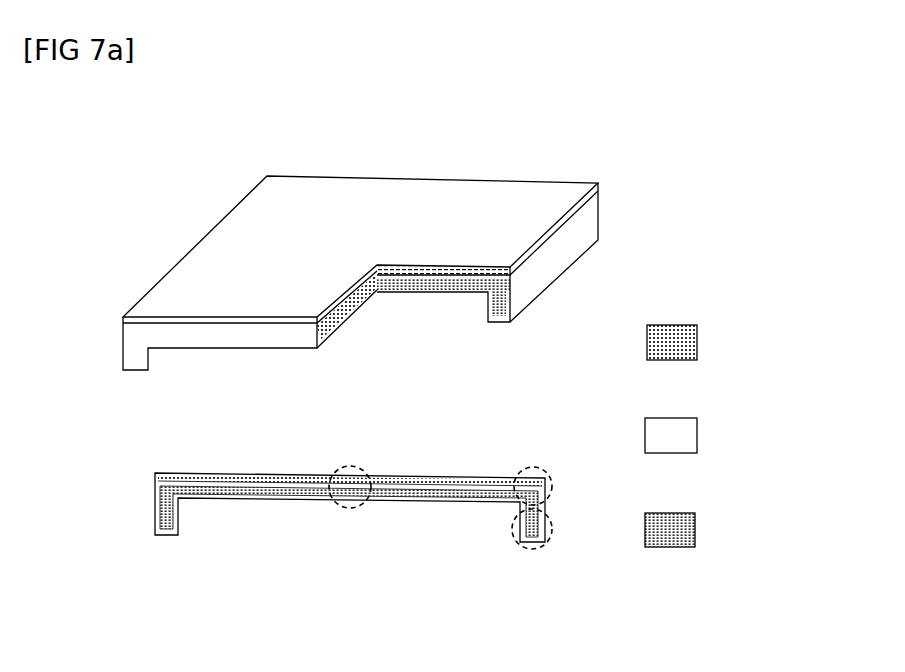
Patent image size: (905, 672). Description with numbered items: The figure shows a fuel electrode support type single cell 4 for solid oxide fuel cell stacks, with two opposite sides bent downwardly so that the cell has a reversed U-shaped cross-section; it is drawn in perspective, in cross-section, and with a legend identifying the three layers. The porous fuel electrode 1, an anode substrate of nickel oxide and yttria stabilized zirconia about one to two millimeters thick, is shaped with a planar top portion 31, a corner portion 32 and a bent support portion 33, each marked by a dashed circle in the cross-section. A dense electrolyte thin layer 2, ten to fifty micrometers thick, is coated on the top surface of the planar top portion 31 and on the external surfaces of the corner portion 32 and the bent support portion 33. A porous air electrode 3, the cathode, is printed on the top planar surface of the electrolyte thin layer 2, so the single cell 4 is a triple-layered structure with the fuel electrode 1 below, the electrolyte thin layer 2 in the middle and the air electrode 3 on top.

The porous fuel electrode 1 is at (415, 290).
The electrolyte thin layer 2 is at (137, 341).
The air electrode 3 is at (213, 250).
The fuel electrode support type single cell 4 is at (214, 204).
The planar top portion 31 is at (360, 466).
The corner portion 32 is at (530, 467).
The bent support portion 33 is at (537, 552).